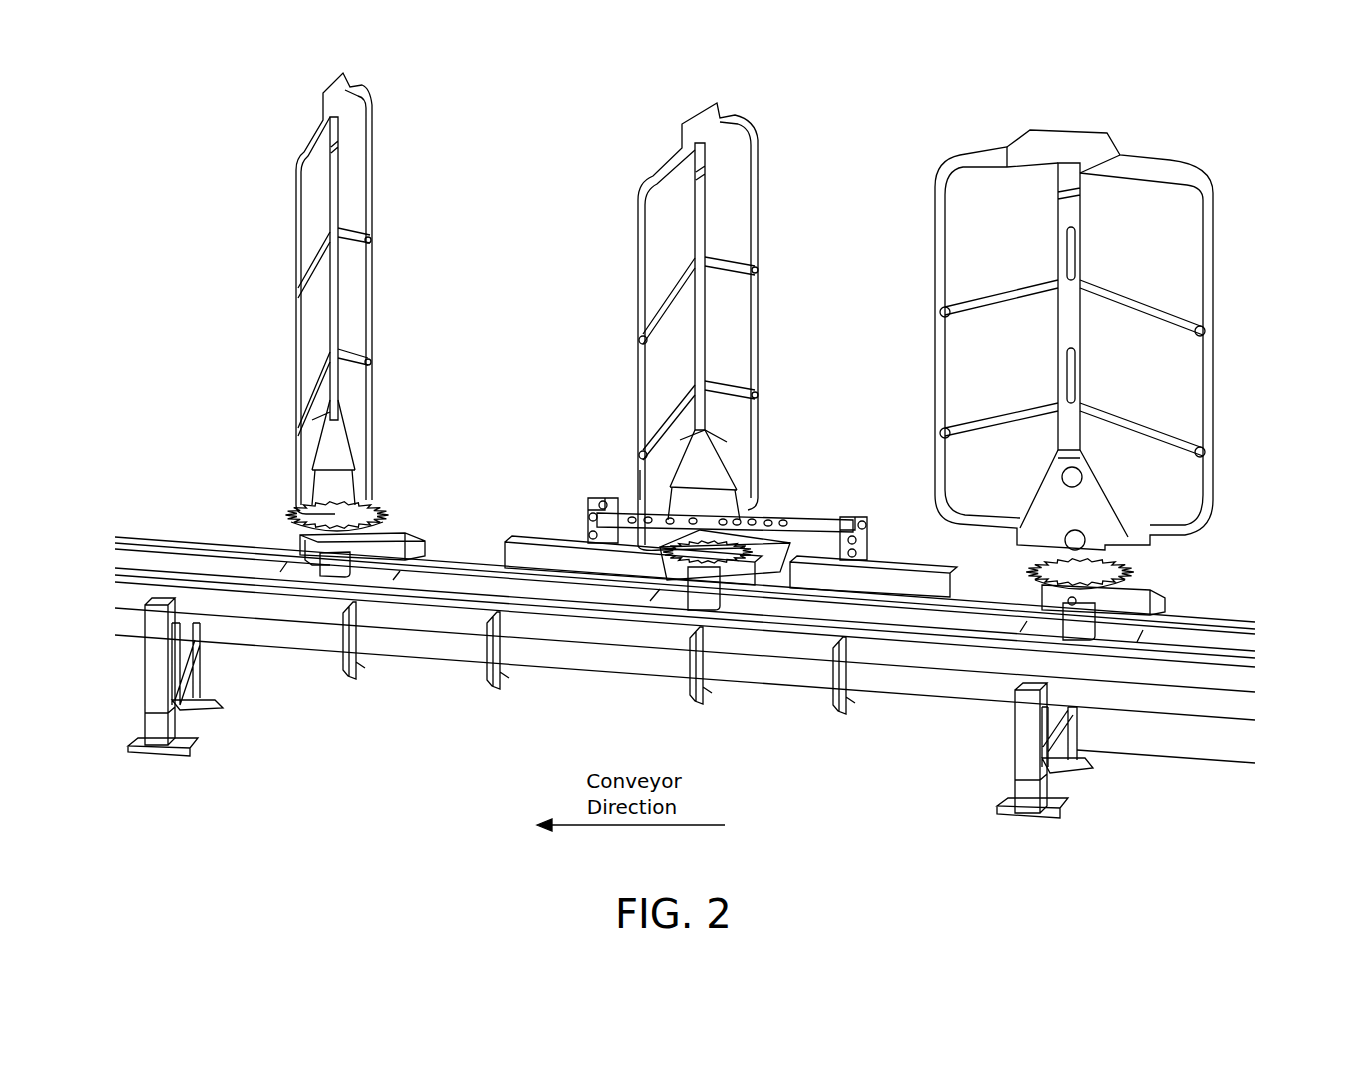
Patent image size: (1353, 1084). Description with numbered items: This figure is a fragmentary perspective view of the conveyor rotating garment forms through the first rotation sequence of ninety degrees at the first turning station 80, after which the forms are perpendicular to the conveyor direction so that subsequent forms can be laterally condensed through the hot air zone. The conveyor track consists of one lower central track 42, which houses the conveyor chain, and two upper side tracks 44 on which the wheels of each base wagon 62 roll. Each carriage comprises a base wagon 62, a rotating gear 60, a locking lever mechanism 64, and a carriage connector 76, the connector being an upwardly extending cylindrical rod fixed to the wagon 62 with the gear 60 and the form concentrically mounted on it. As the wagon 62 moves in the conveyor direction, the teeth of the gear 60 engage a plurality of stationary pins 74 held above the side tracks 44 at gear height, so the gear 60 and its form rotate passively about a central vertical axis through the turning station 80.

The lower central track 42 is at (957, 700).
The upper side tracks 44 is at (1233, 618).
The rotating gear 60 is at (378, 505).
The base wagon 62 is at (292, 560).
The locking lever mechanism 64 is at (405, 533).
The stationary pins 74 is at (773, 522).
The carriage connector 76 is at (333, 572).
The first turning station 80 is at (617, 487).